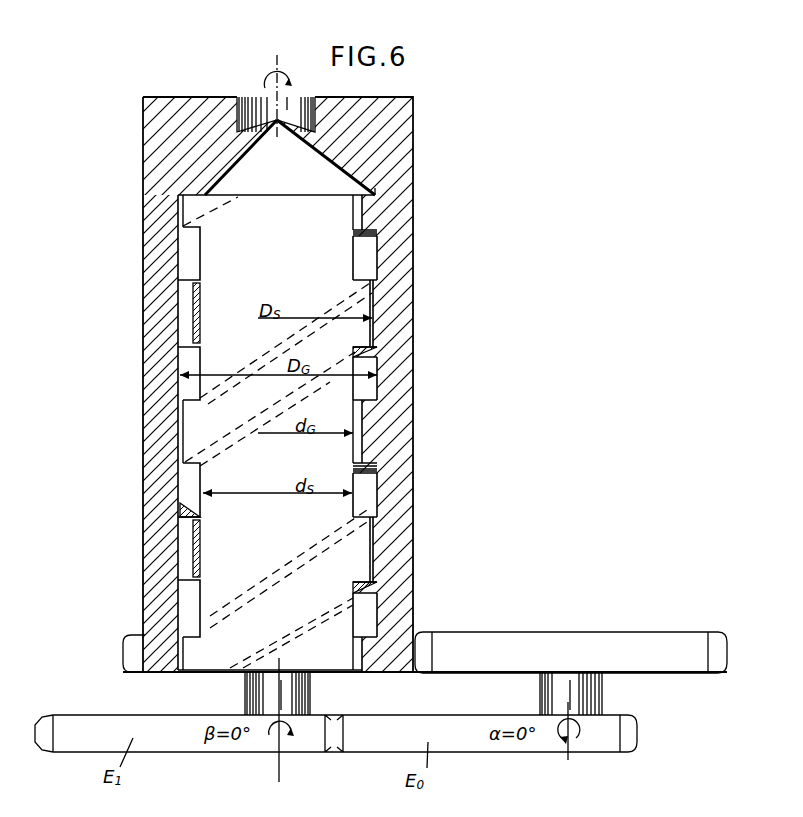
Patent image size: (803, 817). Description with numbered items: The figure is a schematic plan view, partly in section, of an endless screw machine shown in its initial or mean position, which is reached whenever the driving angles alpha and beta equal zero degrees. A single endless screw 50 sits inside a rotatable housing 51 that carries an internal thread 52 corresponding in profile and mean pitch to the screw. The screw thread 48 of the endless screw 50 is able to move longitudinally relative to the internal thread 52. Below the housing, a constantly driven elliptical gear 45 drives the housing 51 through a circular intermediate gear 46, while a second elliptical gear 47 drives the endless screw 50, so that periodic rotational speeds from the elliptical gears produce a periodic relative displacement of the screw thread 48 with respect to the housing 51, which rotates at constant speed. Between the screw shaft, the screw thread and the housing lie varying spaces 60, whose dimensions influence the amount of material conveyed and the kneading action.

The elliptical gear 45 is at (475, 745).
The circular intermediate gear 46 is at (607, 640).
The elliptical gear 47 is at (192, 745).
The screw thread 48 is at (362, 553).
The endless screw 50 is at (235, 262).
The housing 51 is at (400, 260).
The internal thread 52 is at (367, 213).
The varying spaces 60 is at (327, 150).